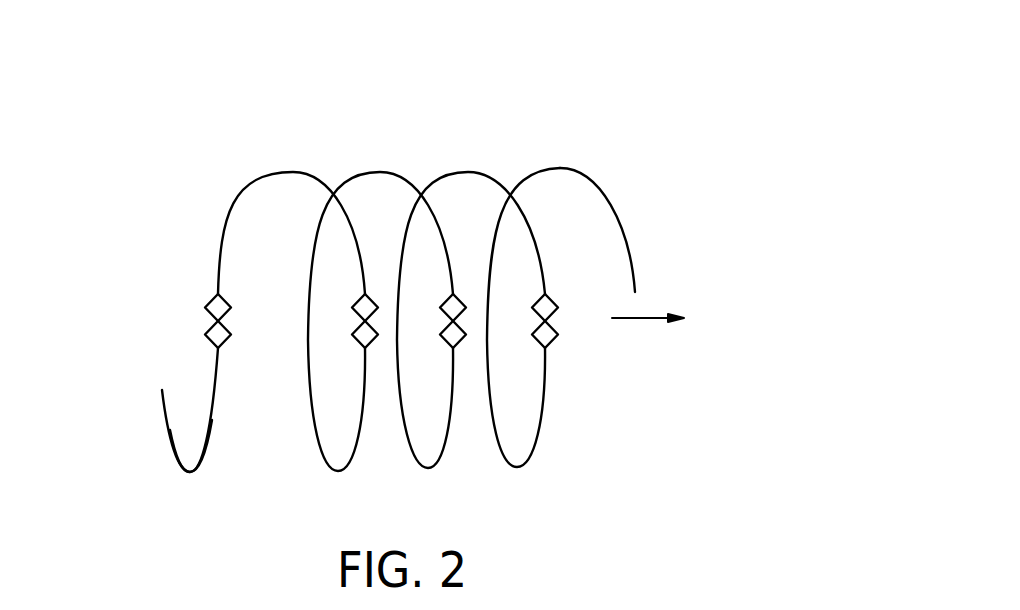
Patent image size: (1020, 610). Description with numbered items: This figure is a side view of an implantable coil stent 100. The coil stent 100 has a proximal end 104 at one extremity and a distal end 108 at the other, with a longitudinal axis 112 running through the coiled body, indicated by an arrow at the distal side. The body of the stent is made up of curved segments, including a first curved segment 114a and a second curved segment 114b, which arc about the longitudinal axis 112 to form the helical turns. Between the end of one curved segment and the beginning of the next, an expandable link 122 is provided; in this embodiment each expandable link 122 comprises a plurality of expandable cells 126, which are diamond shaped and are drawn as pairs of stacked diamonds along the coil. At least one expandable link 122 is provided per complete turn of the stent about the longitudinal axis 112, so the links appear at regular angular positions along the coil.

The coil stent 100 is at (436, 291).
The proximal end 104 is at (160, 468).
The distal end 108 is at (658, 232).
The longitudinal axis 112 is at (642, 318).
The first curved segment 114a is at (203, 462).
The second curved segment 114b is at (243, 201).
The expandable link 122 is at (212, 298).
The expandable cell 126 is at (206, 320).